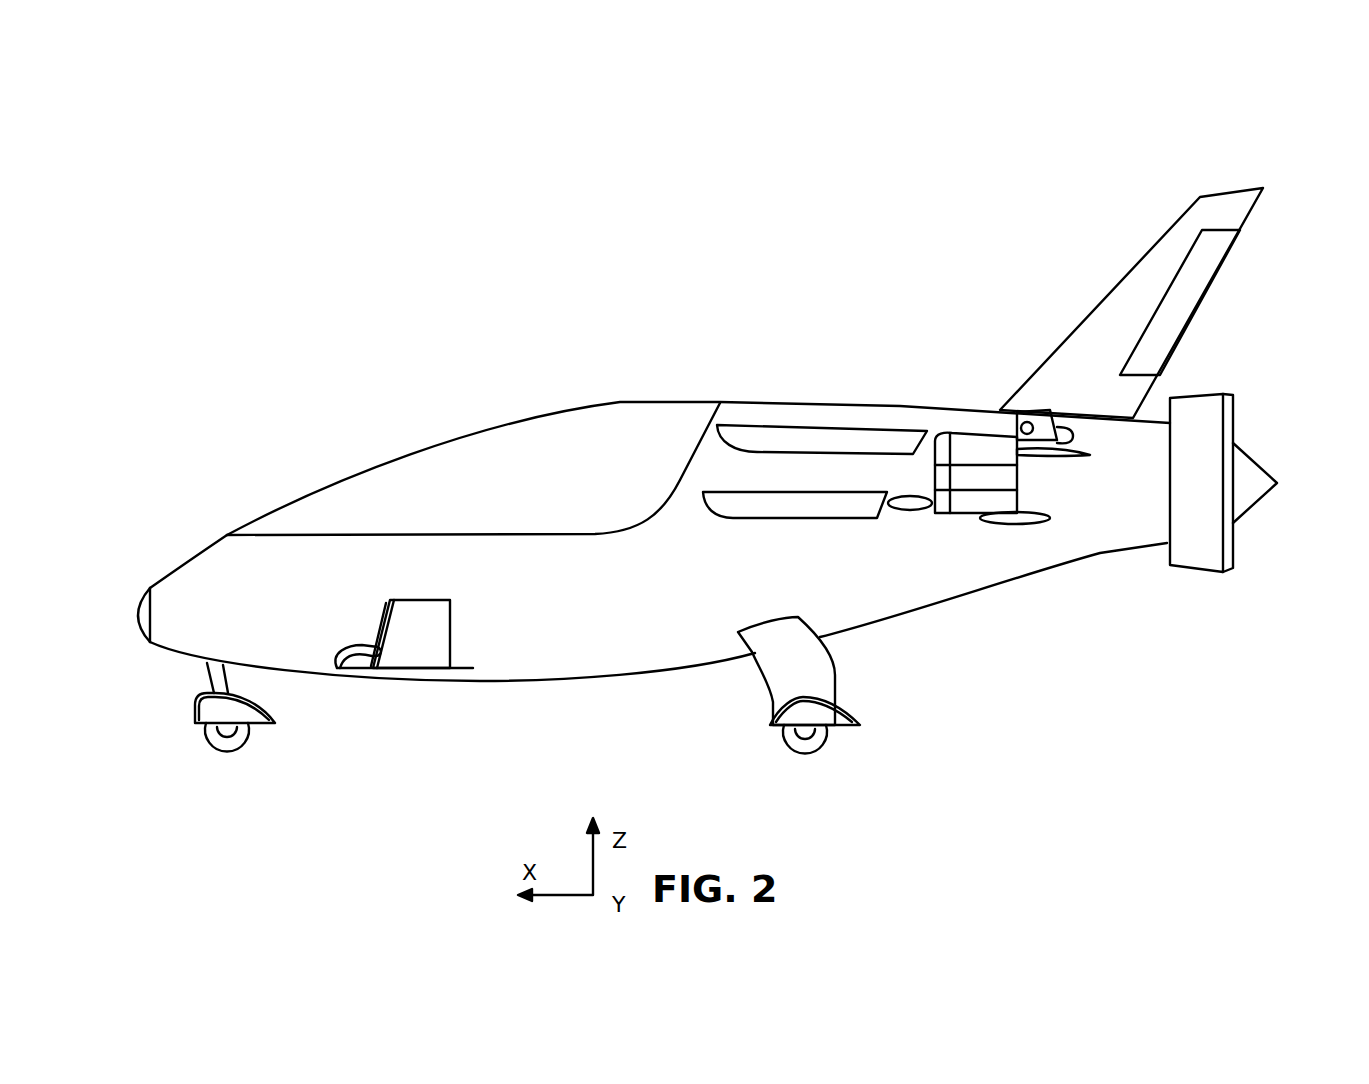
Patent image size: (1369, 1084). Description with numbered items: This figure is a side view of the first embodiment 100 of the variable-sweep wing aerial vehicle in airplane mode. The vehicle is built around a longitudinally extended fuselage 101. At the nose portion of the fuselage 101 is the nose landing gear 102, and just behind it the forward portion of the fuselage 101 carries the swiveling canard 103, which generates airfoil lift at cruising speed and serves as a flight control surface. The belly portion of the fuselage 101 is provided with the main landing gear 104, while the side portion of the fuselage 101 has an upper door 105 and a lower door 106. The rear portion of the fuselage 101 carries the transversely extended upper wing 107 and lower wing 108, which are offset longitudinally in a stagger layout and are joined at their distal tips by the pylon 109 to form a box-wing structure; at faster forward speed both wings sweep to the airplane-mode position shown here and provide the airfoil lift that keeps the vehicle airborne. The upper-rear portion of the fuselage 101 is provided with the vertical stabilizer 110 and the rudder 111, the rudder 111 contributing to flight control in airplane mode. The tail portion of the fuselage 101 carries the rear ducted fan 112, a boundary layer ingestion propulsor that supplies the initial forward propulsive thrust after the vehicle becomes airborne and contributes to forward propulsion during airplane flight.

The first embodiment of the variable-sweep wing aerial vehicle 100 is at (632, 214).
The fuselage 101 is at (227, 537).
The nose landing gear 102 is at (277, 723).
The swiveling canard 103 is at (450, 630).
The main landing gear 104 is at (833, 668).
The upper door 105 is at (830, 427).
The lower door 106 is at (830, 518).
The upper wing 107 is at (950, 433).
The lower wing 108 is at (920, 507).
The pylon 109 is at (1013, 477).
The vertical stabilizer 110 is at (1167, 230).
The rudder 111 is at (1167, 230).
The rear ducted fan 112 is at (1193, 397).